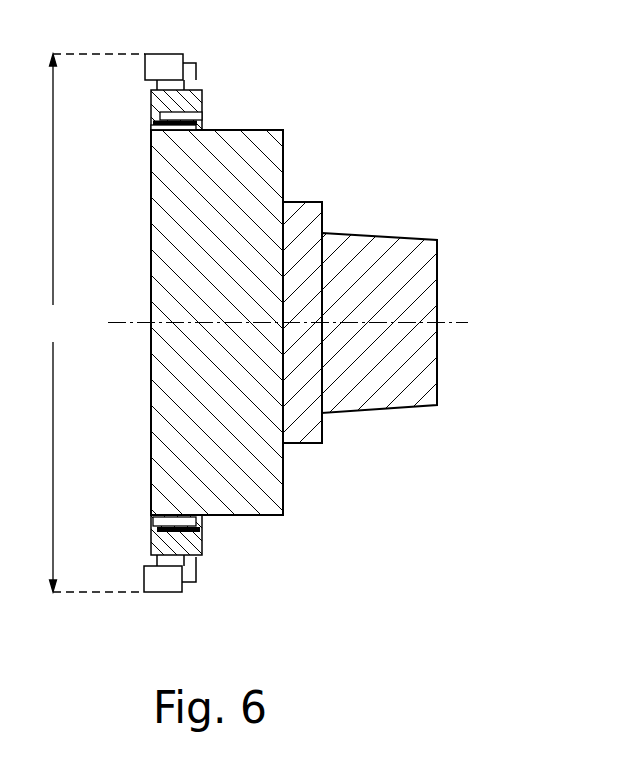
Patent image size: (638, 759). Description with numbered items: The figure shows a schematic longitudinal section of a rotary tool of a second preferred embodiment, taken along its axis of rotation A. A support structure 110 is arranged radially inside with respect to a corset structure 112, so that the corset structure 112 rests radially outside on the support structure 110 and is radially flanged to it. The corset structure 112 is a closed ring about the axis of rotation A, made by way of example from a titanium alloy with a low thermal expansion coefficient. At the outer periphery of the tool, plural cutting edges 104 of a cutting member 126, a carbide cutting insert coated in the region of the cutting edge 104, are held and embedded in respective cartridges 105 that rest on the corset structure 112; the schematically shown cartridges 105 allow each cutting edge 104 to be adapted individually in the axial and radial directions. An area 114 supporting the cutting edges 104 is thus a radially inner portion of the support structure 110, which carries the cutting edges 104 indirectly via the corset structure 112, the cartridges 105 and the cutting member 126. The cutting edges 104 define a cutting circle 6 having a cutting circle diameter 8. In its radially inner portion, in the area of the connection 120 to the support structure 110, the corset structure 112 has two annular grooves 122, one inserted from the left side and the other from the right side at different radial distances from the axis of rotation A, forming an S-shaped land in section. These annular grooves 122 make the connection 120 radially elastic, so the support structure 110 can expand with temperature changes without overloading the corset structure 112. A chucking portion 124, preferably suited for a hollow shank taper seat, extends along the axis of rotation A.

The cutting edge 104 is at (186, 55).
The cartridge 105 is at (191, 78).
The support structure 110 is at (263, 453).
The corset structure 112 is at (190, 105).
The area supporting the cutting edges 114 is at (163, 143).
The connection 120 is at (140, 128).
The annular groove 122 is at (198, 123).
The chucking portion 124 is at (424, 357).
The cutting member 126 is at (129, 62).
The cutting circle 6 is at (99, 324).
The cutting circle diameter 8 is at (53, 323).
The axis of rotation A is at (468, 322).